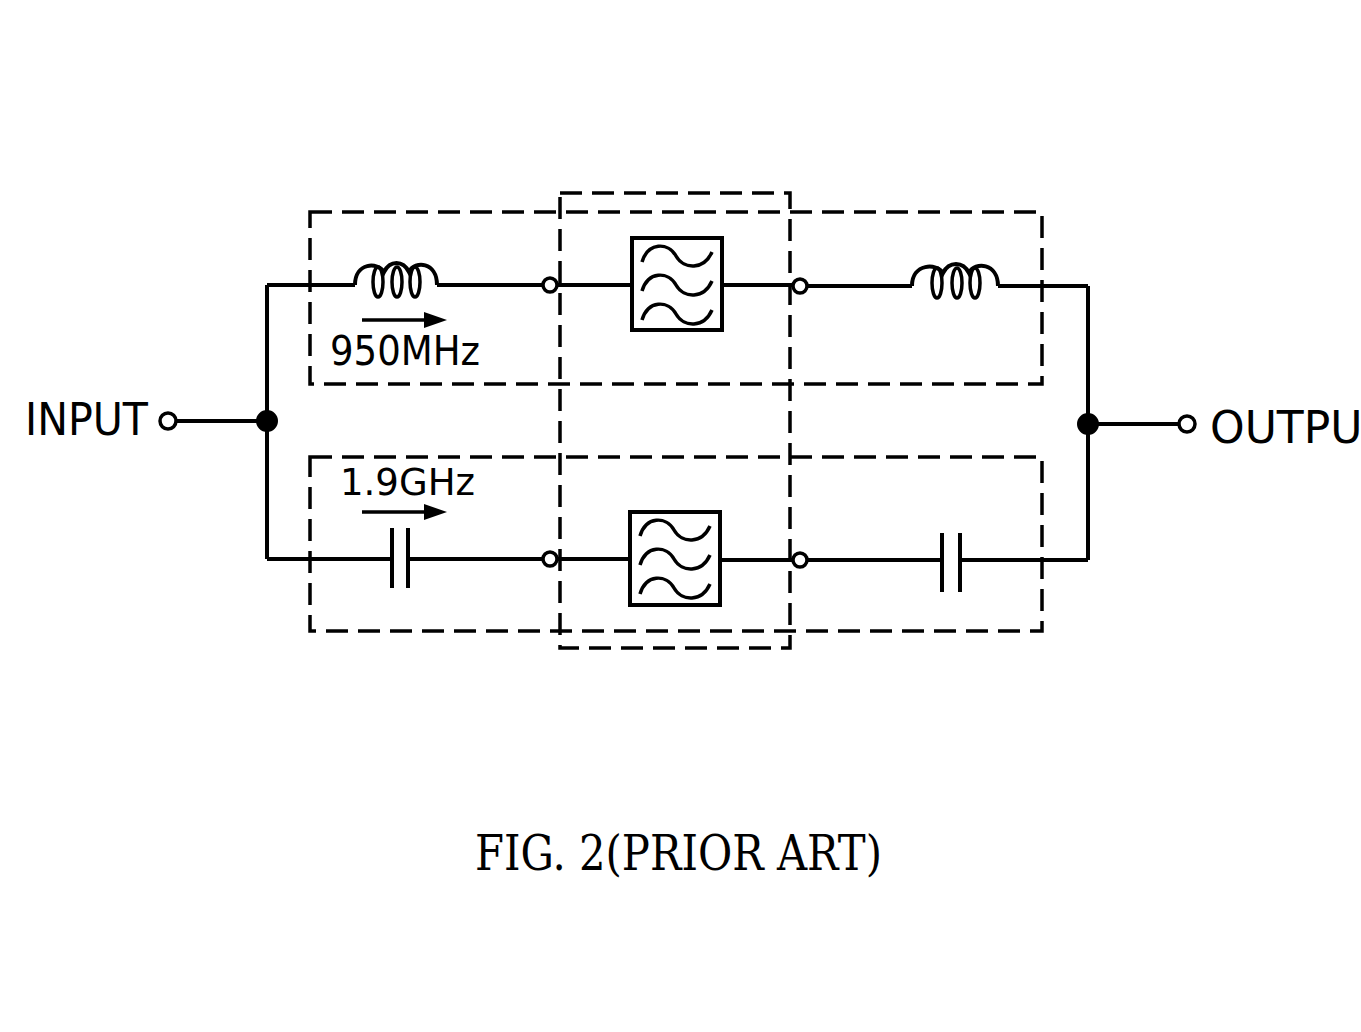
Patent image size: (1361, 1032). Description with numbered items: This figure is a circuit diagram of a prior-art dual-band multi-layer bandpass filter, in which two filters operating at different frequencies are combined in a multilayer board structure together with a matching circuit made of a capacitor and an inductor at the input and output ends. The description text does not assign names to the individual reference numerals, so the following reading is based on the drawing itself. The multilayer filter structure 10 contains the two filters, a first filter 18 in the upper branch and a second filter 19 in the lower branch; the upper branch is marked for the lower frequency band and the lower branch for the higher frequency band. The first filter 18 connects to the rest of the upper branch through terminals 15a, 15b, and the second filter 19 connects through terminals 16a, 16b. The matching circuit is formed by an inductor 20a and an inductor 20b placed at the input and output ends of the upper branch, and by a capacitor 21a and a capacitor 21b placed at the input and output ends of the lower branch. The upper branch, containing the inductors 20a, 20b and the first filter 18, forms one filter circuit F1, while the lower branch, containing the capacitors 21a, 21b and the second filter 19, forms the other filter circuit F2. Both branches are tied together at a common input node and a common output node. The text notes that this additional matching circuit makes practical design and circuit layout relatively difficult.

The filter package (branching filter) 10 is at (617, 193).
The first band-pass filter (950 MHz) 18 is at (677, 238).
The second band-pass filter (1.9 GHz) 19 is at (677, 605).
The input-side inductor 20a is at (393, 265).
The output-side inductor 20b is at (950, 266).
The input-side capacitor 21a is at (410, 575).
The output-side capacitor 21b is at (940, 578).
The input terminal of first filter 15a is at (545, 279).
The output terminal of first filter 15b is at (806, 279).
The input terminal of second filter 16a is at (547, 552).
The output terminal of second filter 16b is at (806, 553).
The first filter circuit F1 is at (1042, 242).
The second filter circuit F2 is at (1042, 605).